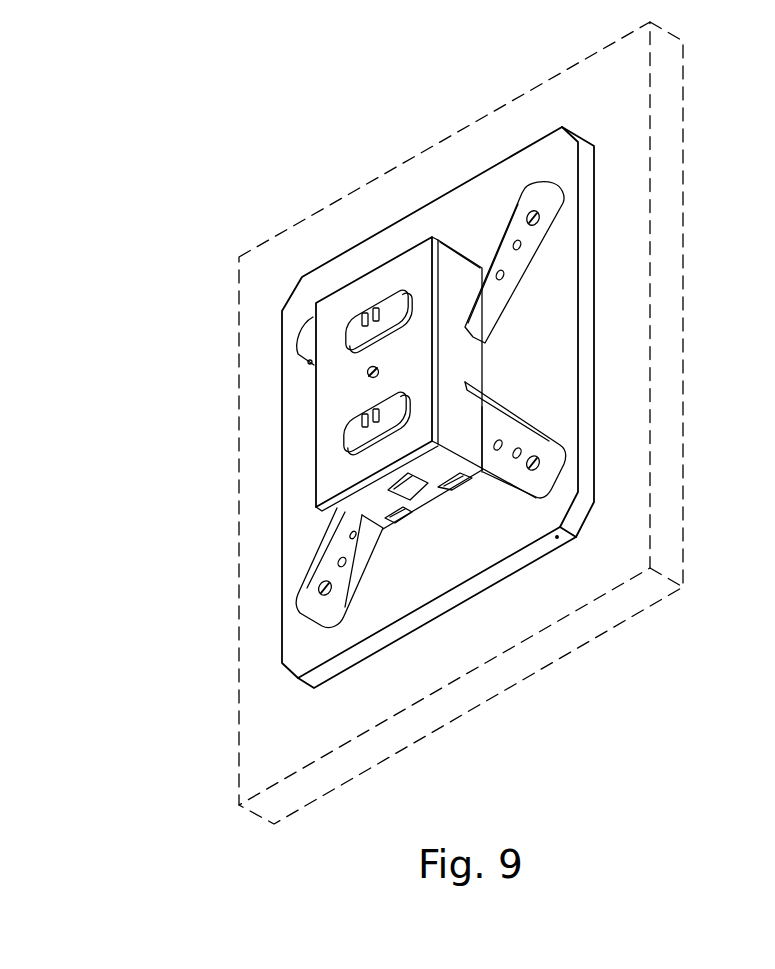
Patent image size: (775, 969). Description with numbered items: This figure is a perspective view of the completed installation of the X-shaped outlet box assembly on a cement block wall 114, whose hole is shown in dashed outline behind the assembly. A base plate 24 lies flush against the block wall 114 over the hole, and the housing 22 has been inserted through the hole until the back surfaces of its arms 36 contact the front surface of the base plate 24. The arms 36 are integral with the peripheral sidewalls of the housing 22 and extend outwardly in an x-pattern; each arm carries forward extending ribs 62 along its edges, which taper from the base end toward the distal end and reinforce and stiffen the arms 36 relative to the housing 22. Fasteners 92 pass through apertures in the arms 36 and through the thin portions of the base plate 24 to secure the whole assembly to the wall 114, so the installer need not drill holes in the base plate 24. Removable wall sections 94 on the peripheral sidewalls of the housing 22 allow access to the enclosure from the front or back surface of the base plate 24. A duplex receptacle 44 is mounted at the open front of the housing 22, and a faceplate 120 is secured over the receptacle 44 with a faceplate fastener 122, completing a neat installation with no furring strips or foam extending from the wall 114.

The housing 22 is at (474, 370).
The base plate 24 is at (546, 367).
The arms 36 is at (560, 193).
The duplex receptacle 44 is at (393, 300).
The forward extending ribs 62 is at (487, 322).
The fasteners 92 is at (540, 465).
The removable wall sections 94 is at (402, 522).
The block wall 114 is at (303, 742).
The faceplate 120 is at (330, 330).
The faceplate fastener 122 is at (367, 373).